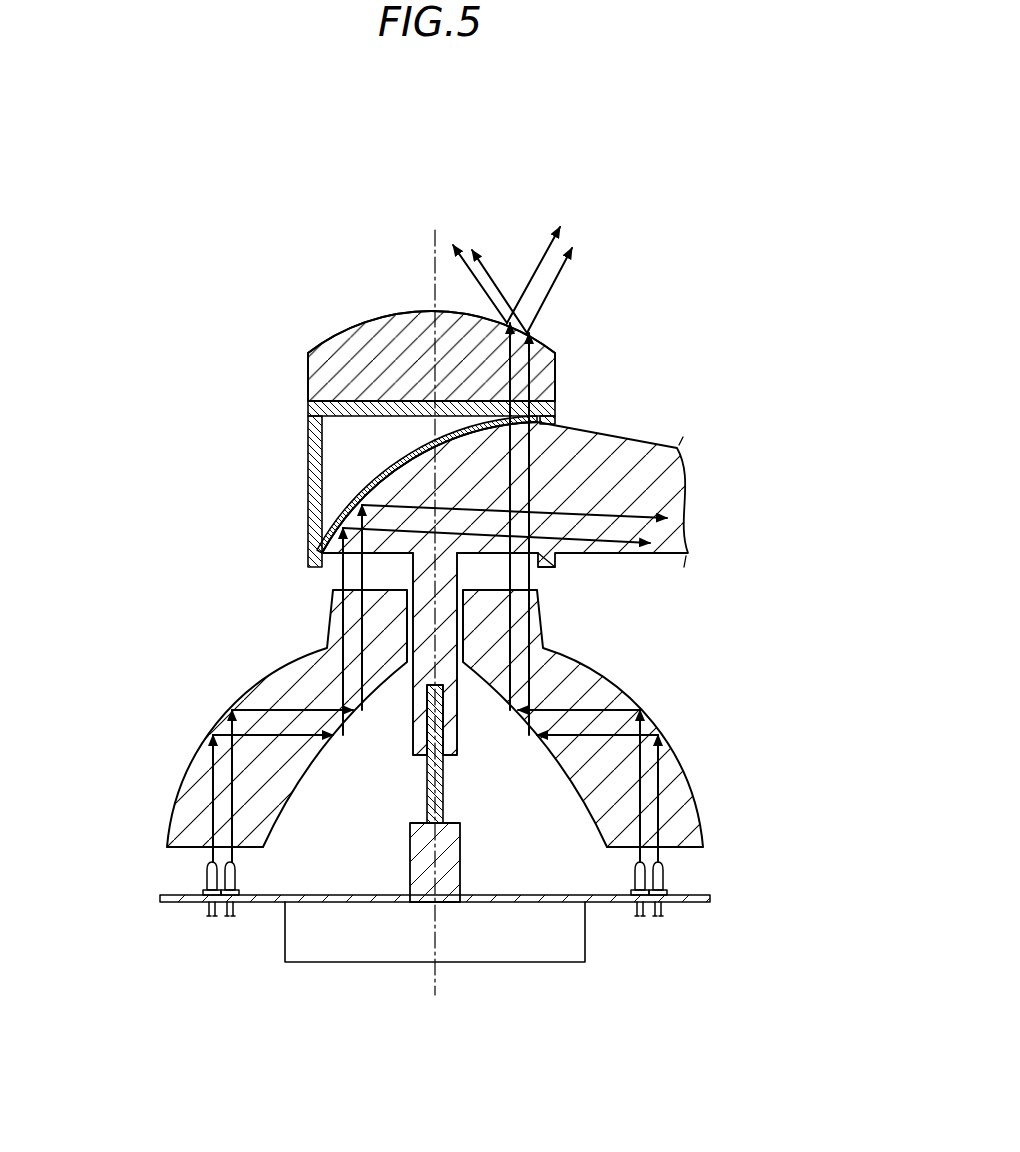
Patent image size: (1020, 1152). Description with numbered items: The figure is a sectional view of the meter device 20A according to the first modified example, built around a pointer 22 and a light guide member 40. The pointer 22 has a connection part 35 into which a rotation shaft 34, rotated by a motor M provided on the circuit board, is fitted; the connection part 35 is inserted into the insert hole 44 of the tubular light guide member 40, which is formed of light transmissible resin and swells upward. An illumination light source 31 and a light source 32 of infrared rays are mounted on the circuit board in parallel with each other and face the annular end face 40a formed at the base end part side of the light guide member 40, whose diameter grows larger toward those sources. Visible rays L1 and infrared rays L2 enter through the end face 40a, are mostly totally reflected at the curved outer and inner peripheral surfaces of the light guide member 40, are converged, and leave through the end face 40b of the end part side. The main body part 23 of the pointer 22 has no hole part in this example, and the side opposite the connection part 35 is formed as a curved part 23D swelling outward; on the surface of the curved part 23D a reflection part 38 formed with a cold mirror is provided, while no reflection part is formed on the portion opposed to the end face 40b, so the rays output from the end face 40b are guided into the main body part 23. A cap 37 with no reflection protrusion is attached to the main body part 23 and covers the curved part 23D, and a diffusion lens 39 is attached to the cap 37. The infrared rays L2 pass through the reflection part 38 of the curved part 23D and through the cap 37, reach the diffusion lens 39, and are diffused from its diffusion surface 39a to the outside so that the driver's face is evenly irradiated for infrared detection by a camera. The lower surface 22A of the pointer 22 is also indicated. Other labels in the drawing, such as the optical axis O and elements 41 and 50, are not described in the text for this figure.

The meter device 20A is at (233, 355).
The pointer 22 is at (600, 400).
The lower surface of the pointer 22A is at (345, 566).
The main body part 23 is at (670, 445).
The curved part 23D is at (380, 480).
The illumination light source 31 is at (224, 876).
The light source of infrared rays 32 is at (670, 876).
The rotation shaft 34 is at (445, 786).
The connection part 35 is at (412, 690).
The cap 37 is at (308, 426).
The reflection part 38 is at (378, 473).
The diffusion lens 39 is at (557, 363).
The diffusion surface 39a is at (344, 330).
The light guide member 40 is at (600, 674).
The end face of the base end part side 40a is at (250, 848).
The end face of the end part side 40b is at (330, 600).
The plate 41 is at (318, 403).
The insert hole 44 is at (465, 597).
The substrate 50 is at (176, 901).
The motor M is at (588, 948).
The optical axis O is at (440, 246).
The visible rays L1 is at (229, 779).
The infrared rays L2 is at (487, 282).